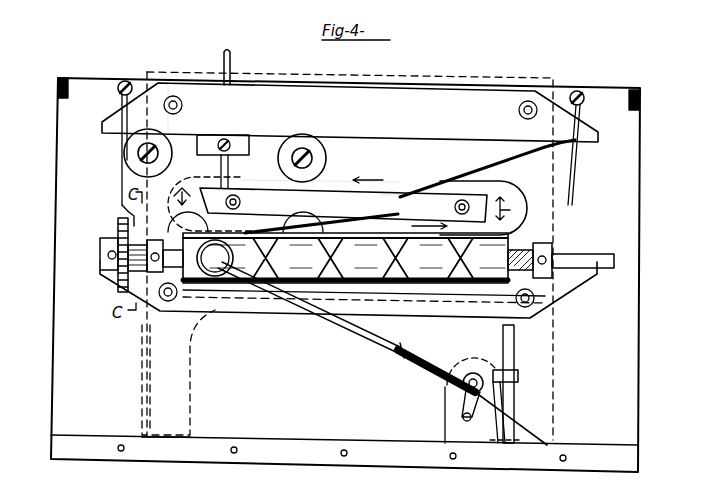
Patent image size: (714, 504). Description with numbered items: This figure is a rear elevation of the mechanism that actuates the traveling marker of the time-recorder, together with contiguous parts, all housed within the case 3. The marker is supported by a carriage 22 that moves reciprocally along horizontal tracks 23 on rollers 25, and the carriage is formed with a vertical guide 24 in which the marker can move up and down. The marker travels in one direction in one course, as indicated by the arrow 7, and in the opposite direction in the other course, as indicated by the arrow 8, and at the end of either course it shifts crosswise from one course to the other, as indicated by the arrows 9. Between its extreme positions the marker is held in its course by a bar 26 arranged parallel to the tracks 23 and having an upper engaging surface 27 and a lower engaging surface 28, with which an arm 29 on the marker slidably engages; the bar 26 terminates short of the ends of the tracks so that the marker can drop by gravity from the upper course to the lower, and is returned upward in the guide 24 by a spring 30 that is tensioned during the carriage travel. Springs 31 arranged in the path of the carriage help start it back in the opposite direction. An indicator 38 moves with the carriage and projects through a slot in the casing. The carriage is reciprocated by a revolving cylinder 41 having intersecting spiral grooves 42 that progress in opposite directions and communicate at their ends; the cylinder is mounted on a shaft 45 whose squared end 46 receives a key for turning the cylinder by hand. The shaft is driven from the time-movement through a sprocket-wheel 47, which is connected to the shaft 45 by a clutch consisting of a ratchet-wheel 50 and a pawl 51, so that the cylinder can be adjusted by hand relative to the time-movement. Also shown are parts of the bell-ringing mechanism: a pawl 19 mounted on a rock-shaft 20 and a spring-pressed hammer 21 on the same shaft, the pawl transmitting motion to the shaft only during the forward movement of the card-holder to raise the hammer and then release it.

The case 3 is at (625, 358).
The arrow 7 is at (366, 186).
The arrow 8 is at (432, 226).
The arrows 9 is at (341, 206).
The pawl 19 is at (518, 376).
The rock-shaft 20 is at (458, 388).
The spring-pressed hammer 21 is at (316, 300).
The carriage 22 is at (180, 140).
The tracks 23 is at (190, 350).
The guide 24 is at (230, 161).
The rollers 25 is at (343, 205).
The bar 26 is at (350, 201).
The engaging surface 27 is at (392, 188).
The engaging surface 28 is at (390, 203).
The arm 29 is at (245, 213).
The spring 30 is at (505, 162).
The springs 31 is at (122, 148).
The indicator 38 is at (241, 61).
The cylinder 41 is at (485, 265).
The spiral grooves 42 is at (428, 272).
The shaft 45 is at (540, 250).
The squared end 46 is at (572, 262).
The sprocket-wheel 47 is at (118, 232).
The ratchet-wheel 50 is at (108, 256).
The pawl 51 is at (124, 210).